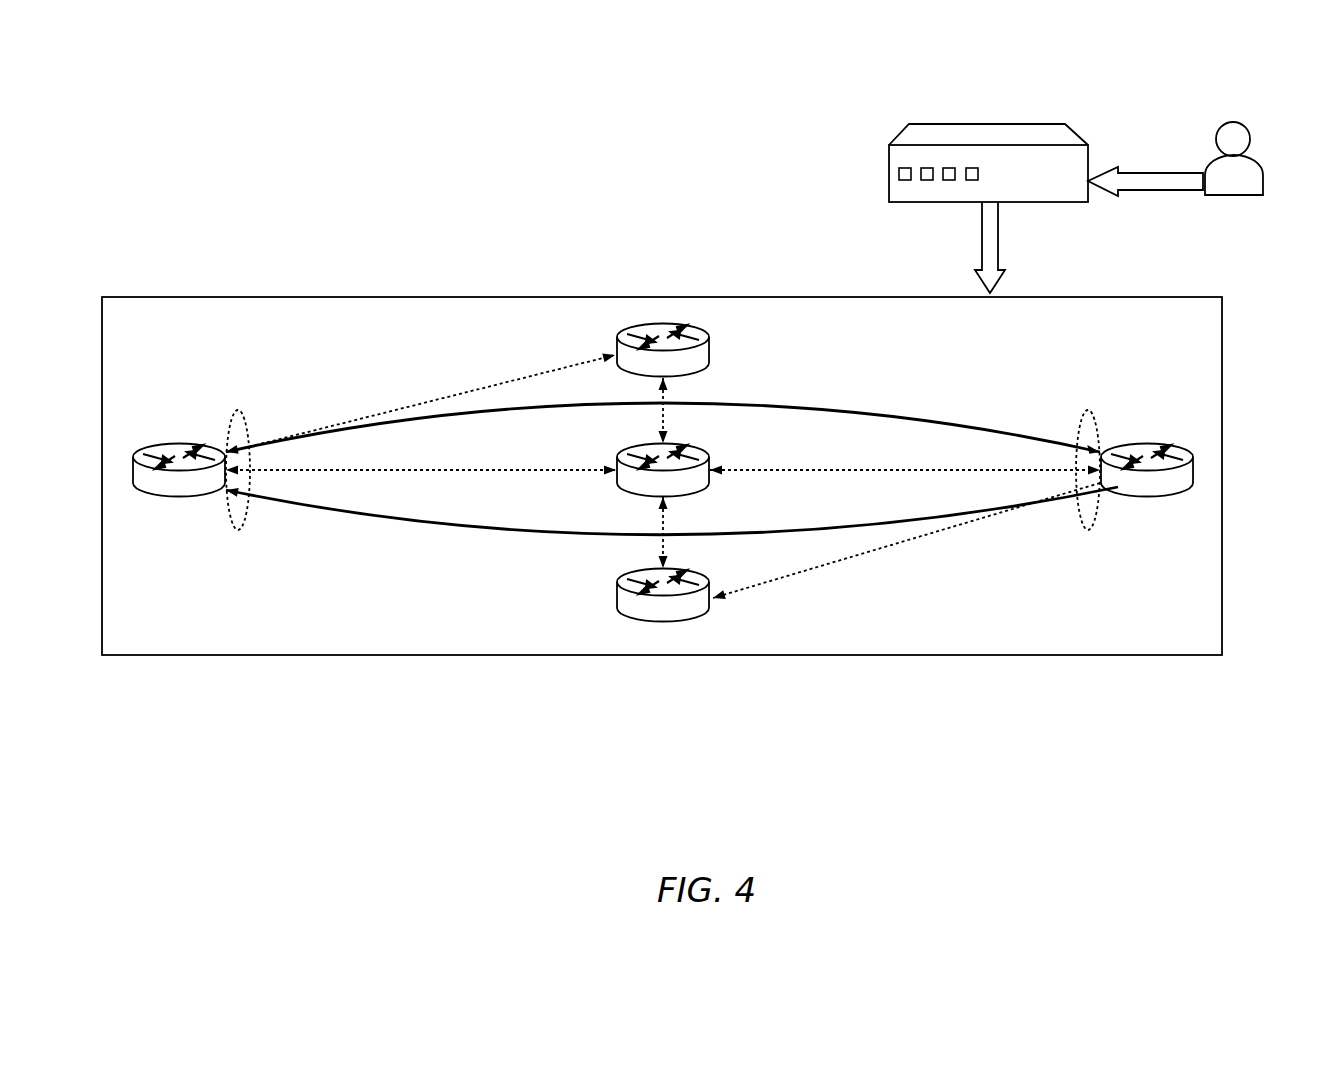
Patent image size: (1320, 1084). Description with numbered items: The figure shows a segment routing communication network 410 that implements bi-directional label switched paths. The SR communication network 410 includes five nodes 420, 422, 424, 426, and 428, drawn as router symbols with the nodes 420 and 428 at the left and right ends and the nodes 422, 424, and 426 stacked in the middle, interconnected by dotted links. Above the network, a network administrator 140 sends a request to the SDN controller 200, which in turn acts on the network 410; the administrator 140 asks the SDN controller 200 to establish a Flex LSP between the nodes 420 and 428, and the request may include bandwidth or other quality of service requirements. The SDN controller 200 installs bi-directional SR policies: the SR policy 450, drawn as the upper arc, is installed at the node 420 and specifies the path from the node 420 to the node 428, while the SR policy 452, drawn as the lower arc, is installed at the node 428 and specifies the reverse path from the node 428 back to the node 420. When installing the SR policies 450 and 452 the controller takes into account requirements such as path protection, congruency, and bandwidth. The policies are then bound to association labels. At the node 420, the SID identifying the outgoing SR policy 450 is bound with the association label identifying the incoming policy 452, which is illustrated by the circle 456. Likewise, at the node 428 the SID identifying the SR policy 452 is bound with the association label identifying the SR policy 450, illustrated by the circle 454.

The network administrator 140 is at (1238, 122).
The SDN controller 200 is at (988, 124).
The SR communication network 410 is at (173, 339).
The node 420 is at (181, 444).
The node 422 is at (712, 352).
The node 424 is at (690, 442).
The node 426 is at (615, 595).
The node 428 is at (1147, 441).
The SR policy 450 is at (886, 409).
The SR policy 452 is at (436, 529).
The circle 454 is at (1089, 531).
The circle 456 is at (238, 410).